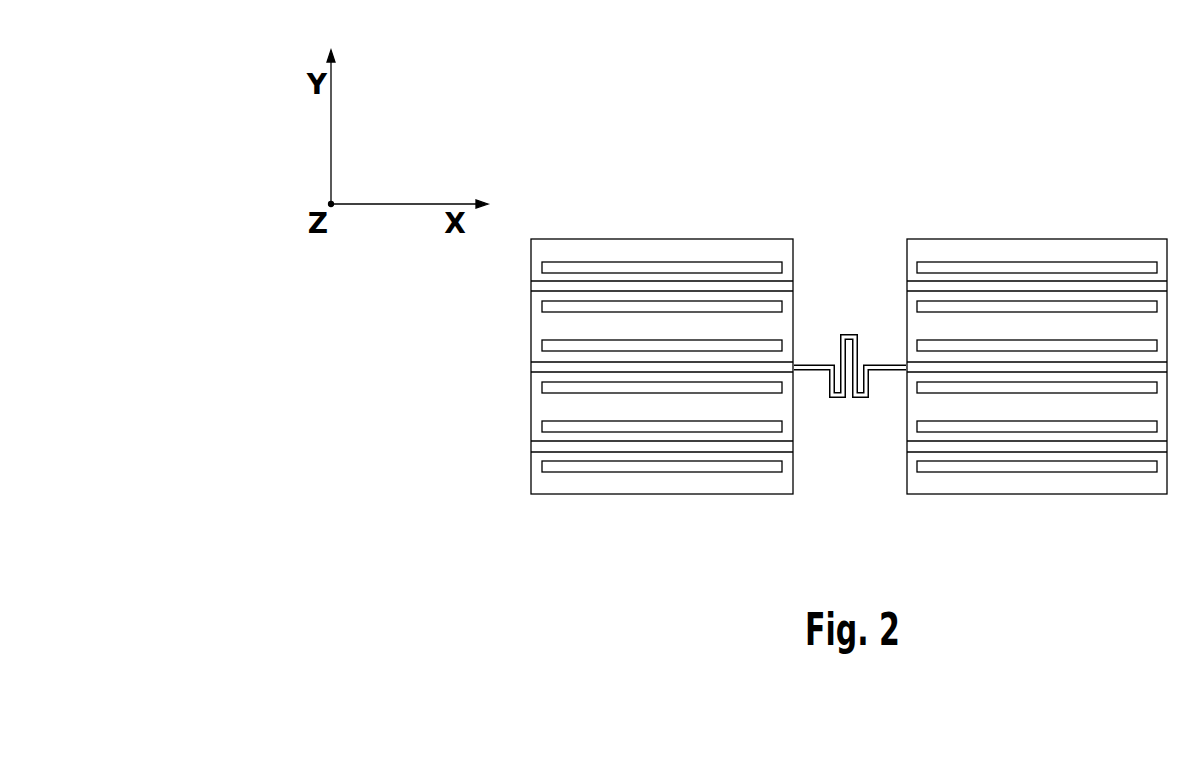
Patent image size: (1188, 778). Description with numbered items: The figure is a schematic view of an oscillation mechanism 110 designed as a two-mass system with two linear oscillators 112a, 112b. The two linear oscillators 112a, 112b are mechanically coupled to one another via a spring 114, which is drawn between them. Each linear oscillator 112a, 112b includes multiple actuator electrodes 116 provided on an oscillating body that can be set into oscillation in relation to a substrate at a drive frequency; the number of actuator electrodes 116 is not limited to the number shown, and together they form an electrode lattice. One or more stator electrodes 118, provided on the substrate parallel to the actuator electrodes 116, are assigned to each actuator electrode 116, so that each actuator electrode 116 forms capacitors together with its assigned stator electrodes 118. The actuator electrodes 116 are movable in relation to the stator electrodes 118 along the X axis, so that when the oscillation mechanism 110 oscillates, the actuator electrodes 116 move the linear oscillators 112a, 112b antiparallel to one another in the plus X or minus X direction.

The oscillation mechanism 110 is at (568, 559).
The linear oscillator 112a is at (651, 250).
The linear oscillator 112b is at (1033, 250).
The spring 114 is at (839, 393).
The actuator electrodes 116 is at (780, 446).
The stator electrodes 118 is at (918, 266).